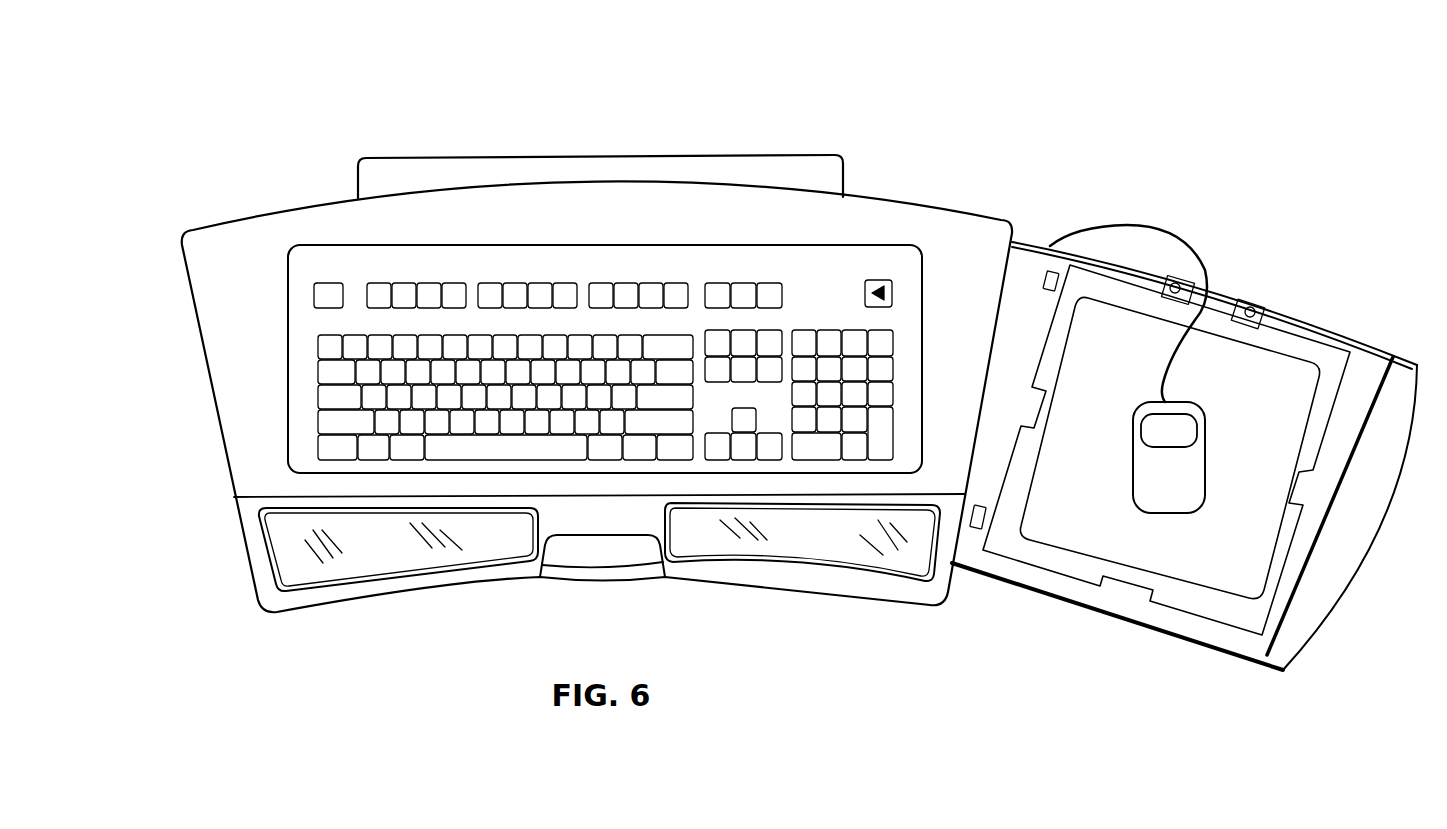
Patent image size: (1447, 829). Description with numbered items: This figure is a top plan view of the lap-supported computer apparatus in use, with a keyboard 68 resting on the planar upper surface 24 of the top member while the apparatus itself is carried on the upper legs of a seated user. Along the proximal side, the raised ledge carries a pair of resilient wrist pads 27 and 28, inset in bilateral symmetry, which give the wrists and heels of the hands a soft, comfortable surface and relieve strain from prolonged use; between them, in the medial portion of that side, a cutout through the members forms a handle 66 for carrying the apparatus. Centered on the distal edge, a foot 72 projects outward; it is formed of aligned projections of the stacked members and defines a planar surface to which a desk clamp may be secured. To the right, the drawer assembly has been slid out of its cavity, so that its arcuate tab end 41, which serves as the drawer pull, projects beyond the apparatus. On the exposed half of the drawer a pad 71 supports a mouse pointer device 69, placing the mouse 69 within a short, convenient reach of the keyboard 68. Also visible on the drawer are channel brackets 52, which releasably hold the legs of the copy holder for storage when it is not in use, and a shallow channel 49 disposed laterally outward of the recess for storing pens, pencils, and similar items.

The planar upper surface 24 is at (267, 240).
The foot 72 is at (445, 172).
The keyboard 68 is at (843, 277).
The channel brackets 52 is at (1050, 272).
The resilient pad 27 is at (297, 550).
The resilient pad 28 is at (823, 545).
The handle 66 is at (557, 580).
The tab end 41 is at (1380, 518).
The shallow channel 49 is at (1303, 590).
The pad 71 is at (1228, 565).
The mouse pointer device 69 is at (1158, 475).